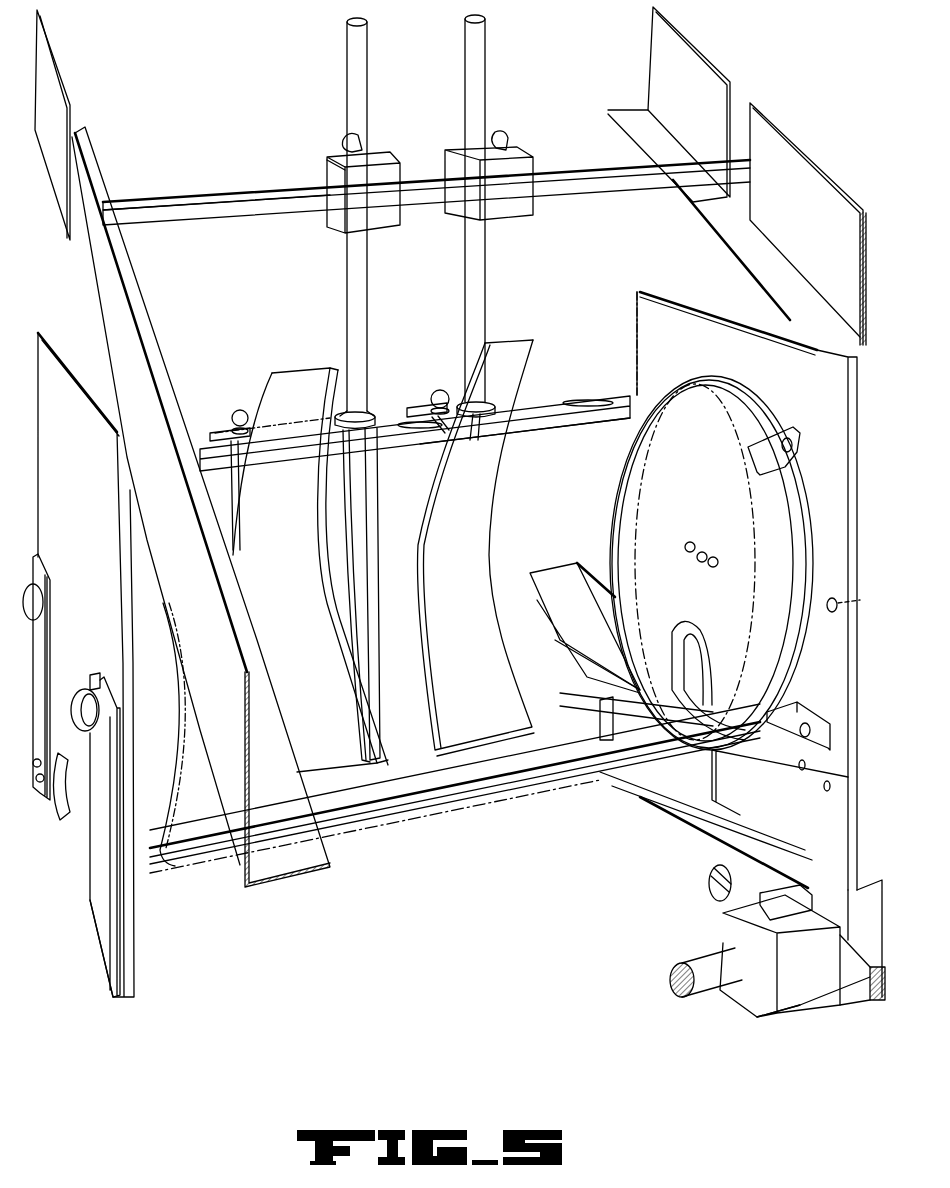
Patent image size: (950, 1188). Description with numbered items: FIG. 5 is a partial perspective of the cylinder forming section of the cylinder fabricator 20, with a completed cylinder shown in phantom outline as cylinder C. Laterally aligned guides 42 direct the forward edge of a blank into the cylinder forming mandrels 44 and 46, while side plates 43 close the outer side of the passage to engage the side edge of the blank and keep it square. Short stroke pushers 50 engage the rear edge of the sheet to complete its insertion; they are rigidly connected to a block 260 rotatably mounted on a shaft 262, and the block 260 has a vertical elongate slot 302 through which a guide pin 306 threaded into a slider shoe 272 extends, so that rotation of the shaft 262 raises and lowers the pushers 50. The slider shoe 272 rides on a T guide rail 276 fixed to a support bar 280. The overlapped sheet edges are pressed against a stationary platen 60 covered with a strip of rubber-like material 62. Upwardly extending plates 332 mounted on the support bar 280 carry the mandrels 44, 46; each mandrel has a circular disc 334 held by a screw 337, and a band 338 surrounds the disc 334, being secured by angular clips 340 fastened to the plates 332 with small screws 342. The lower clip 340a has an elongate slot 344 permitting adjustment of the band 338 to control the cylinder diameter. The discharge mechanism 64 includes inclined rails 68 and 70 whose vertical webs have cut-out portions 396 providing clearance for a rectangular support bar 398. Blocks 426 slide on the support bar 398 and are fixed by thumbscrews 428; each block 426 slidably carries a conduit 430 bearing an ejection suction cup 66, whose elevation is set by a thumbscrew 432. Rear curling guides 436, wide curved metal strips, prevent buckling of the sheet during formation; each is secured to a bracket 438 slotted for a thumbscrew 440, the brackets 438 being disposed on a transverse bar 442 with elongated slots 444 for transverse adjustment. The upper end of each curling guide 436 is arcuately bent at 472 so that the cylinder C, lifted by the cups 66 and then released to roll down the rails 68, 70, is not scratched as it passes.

The cylinder fabricator 20 is at (163, 1010).
The cut-out portion 396 is at (72, 118).
The discharge rail 68 is at (148, 299).
The upwardly extending plate 332 is at (50, 348).
The discharge mechanism 64 is at (426, 164).
The rectangular support bar 398 is at (243, 207).
The discharge rail 70 is at (697, 212).
The conduit 430 is at (466, 46).
The block 426 is at (391, 198).
The thumbscrew 432 is at (330, 176).
The thumbscrew 428 is at (490, 140).
The elongated slot 444 is at (341, 419).
The transverse bar 442 is at (583, 415).
The bracket 438 is at (316, 442).
The thumbscrew 440 is at (246, 408).
The ejection suction cup 66 is at (343, 442).
The rear curling guide 436 is at (353, 576).
The arcuately bent upper end portion 472 is at (288, 372).
The cylinder forming mandrel 46 is at (700, 540).
The band 338 is at (718, 378).
The circular disc 334 is at (645, 512).
The screw 337 is at (702, 555).
The angular clip 340 is at (802, 555).
The small screw 342 is at (782, 440).
The clip 340a is at (788, 725).
The elongate slot 344 is at (780, 782).
The completed cylinder C is at (637, 332).
The side plate 43 is at (581, 632).
The lateral guide 42 is at (570, 636).
The short stroke pusher 50 is at (600, 722).
The rubber-like strip 62 is at (358, 805).
The stationary platen 60 is at (438, 800).
The cylinder forming mandrel 44 is at (140, 890).
The support bar 280 is at (865, 880).
The block 260 is at (756, 963).
The shaft 262 is at (703, 955).
The vertical elongate slot 302 is at (725, 907).
The guide pin 306 is at (709, 880).
The slider shoe 272 is at (800, 1007).
The T guide rail 276 is at (862, 1000).